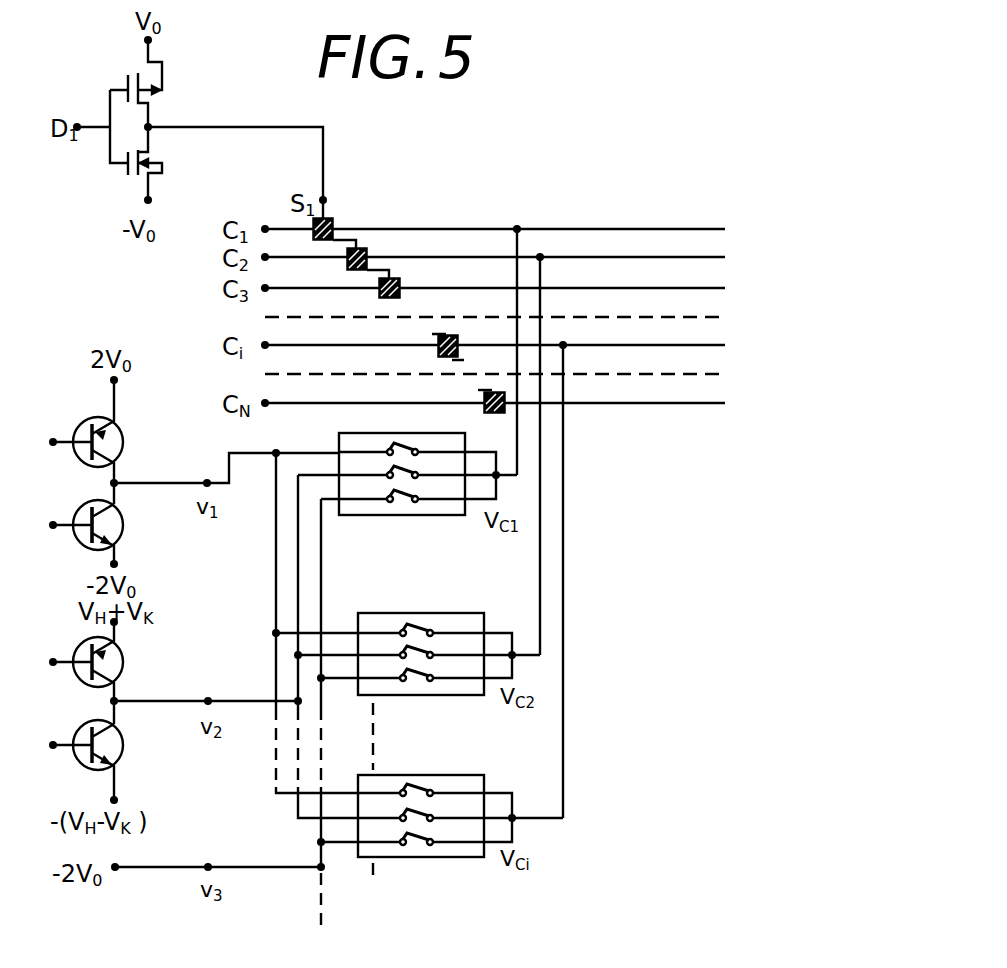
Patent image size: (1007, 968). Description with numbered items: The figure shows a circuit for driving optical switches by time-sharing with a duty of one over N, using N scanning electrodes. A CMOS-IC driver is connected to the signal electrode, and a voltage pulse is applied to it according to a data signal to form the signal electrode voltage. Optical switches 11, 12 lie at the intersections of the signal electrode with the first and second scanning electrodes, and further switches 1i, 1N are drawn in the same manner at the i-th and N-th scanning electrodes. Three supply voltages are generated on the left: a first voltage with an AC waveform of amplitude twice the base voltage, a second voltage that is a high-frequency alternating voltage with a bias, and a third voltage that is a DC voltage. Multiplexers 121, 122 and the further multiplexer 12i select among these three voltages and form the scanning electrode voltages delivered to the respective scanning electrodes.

The optical switch 11 is at (333, 223).
The optical switch 12 is at (367, 252).
The i-th switching element (column line Ci) 1i is at (458, 340).
The N-th switching element (column line CN) 1N is at (490, 415).
The multiplexer 121 is at (393, 515).
The multiplexer 122 is at (407, 695).
The i-th switch group (voltage selector for Ci) 12i is at (410, 857).